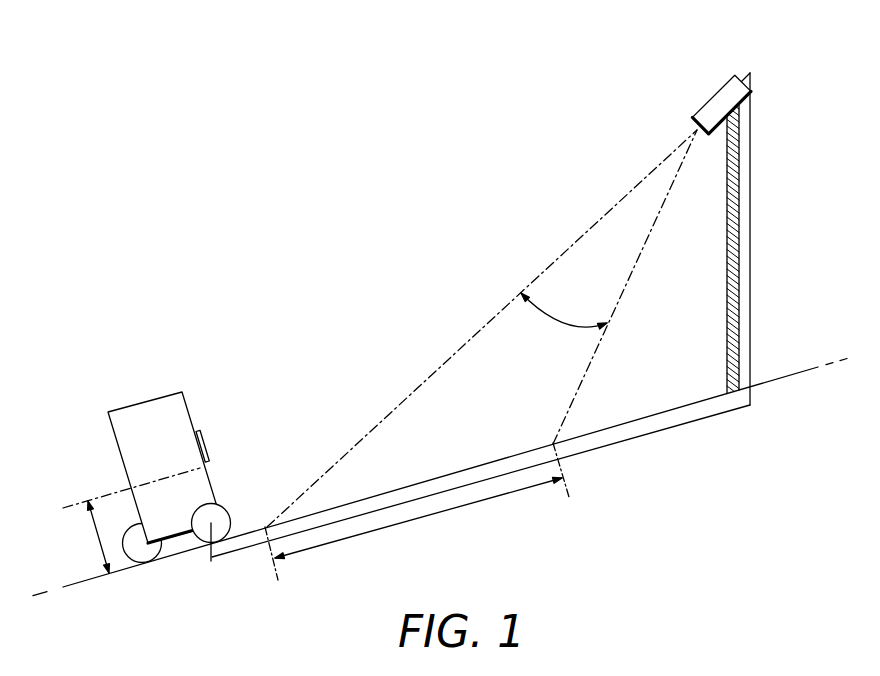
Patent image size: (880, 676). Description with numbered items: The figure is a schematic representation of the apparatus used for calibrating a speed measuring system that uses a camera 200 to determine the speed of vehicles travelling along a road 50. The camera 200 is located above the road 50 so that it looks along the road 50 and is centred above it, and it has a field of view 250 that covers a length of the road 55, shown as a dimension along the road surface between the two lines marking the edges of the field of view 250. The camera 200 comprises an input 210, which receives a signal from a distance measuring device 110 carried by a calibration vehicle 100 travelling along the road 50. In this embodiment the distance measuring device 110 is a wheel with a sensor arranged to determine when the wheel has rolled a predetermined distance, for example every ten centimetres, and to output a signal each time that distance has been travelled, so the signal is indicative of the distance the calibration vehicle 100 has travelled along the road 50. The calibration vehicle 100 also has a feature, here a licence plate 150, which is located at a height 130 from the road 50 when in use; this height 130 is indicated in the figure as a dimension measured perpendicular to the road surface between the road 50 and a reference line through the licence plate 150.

The road 50 is at (787, 377).
The length of the road 55 is at (417, 511).
The calibration vehicle 100 is at (108, 412).
The distance measuring device 110 is at (227, 503).
The height 130 is at (126, 520).
The licence plate 150 is at (208, 444).
The camera 200 is at (712, 97).
The input 210 is at (746, 73).
The field of view 250 is at (482, 328).